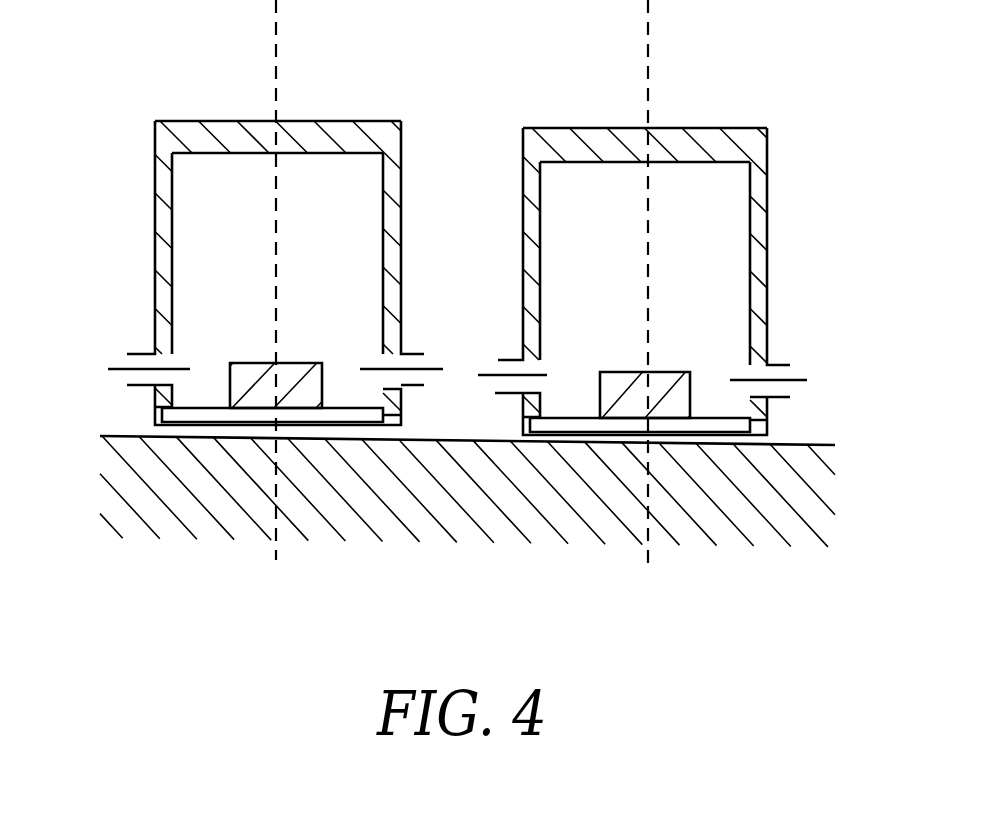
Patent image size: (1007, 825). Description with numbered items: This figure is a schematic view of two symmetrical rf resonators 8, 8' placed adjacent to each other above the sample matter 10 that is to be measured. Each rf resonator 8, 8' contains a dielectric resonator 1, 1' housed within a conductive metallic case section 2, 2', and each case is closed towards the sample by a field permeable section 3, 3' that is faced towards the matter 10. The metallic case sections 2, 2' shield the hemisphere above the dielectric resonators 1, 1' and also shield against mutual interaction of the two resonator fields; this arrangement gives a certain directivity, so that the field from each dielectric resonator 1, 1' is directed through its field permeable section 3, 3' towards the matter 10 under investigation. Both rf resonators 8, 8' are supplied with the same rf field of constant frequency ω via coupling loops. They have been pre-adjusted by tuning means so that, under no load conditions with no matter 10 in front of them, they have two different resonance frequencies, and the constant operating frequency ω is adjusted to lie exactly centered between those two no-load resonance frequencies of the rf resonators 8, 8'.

The dielectric resonator 1 is at (276, 334).
The dielectric resonator 1' is at (645, 343).
The metallic case section 2 is at (259, 273).
The metallic case section 2' is at (675, 281).
The field permeable section 3 is at (272, 347).
The field permeable section 3' is at (640, 354).
The rf resonator 8 is at (255, 82).
The rf resonator 8' is at (679, 99).
The matter 10 is at (207, 520).